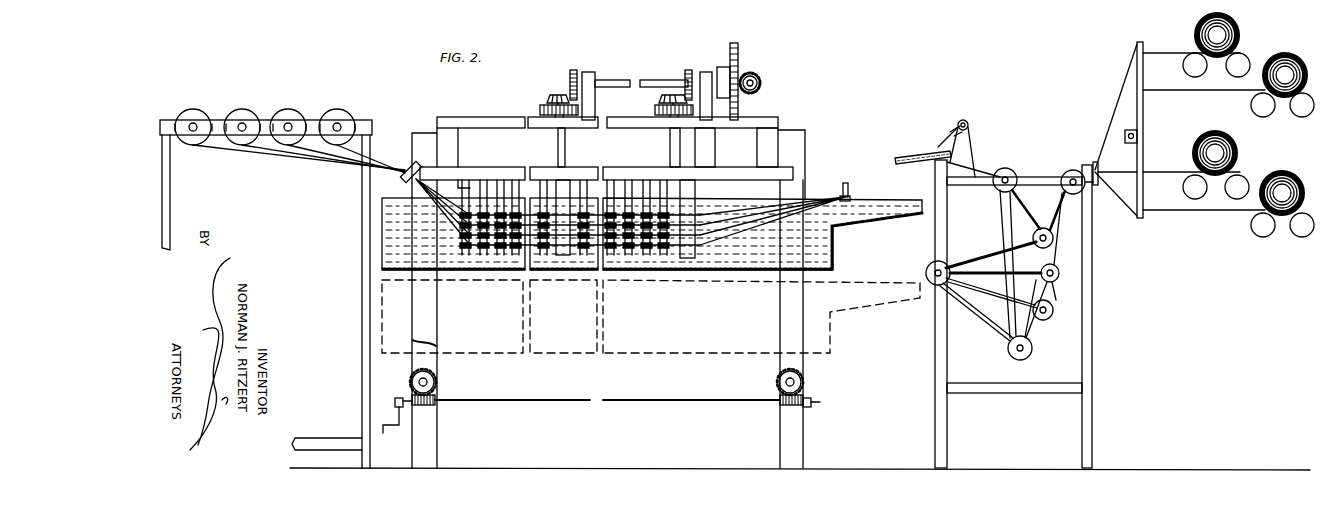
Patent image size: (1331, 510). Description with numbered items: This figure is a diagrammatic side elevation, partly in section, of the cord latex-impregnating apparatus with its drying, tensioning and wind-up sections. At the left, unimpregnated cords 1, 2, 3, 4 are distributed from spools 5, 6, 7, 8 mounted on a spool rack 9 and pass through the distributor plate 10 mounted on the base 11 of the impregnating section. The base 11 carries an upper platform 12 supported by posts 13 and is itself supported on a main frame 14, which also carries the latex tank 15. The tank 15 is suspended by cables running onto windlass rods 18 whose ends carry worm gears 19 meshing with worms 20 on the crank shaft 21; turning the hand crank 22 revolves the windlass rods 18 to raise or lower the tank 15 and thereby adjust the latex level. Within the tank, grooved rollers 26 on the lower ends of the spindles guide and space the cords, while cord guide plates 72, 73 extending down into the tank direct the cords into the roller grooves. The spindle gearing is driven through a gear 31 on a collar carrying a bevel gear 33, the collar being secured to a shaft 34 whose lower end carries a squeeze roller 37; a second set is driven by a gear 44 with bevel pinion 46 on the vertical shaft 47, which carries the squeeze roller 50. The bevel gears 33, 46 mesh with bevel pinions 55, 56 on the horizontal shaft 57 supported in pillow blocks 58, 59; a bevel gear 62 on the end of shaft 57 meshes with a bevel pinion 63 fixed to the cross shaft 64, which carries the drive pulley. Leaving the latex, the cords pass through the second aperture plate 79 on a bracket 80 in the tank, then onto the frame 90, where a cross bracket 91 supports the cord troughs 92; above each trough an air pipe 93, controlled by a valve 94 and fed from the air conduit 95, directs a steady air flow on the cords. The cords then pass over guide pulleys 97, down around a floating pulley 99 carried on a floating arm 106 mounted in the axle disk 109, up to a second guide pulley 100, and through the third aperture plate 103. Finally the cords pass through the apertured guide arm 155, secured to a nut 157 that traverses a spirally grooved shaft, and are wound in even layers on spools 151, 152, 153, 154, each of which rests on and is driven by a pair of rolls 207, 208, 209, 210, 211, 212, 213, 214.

The unimpregnated cord 1 is at (345, 163).
The unimpregnated cord 2 is at (312, 160).
The unimpregnated cord 3 is at (273, 157).
The unimpregnated cord 4 is at (240, 151).
The spool 5 is at (337, 109).
The spool 6 is at (288, 109).
The spool 7 is at (242, 109).
The spool 8 is at (193, 109).
The spool rack 9 is at (366, 120).
The distributor plate 10 is at (404, 165).
The base 11 is at (494, 167).
The upper platform 12 is at (466, 117).
The posts 13 is at (452, 138).
The main frame 14 is at (432, 329).
The latex tank 15 is at (724, 275).
The windlass rods 18 is at (428, 382).
The worm gears 19 is at (410, 380).
The worms 20 is at (425, 405).
The crank shaft 21 is at (614, 405).
The hand crank 22 is at (599, 424).
The roller 26 is at (488, 255).
The gear 31 is at (540, 105).
The bevel gear 33 is at (554, 93).
The shaft 34 is at (565, 146).
The squeeze roller 37 is at (562, 255).
The gear 44 is at (655, 108).
The bevel pinion 46 is at (665, 93).
The vertical shaft 47 is at (670, 143).
The squeeze roller 50 is at (670, 255).
The bevel pinion 55 is at (573, 70).
The bevel pinion 56 is at (688, 70).
The horizontal shaft 57 is at (614, 80).
The pillow block 58 is at (590, 72).
The pillow block 59 is at (708, 72).
The bevel gear 62 is at (742, 52).
The bevel pinion 63 is at (760, 75).
The cross shaft 64 is at (760, 88).
The cord guide plate 72 is at (460, 178).
The cord guide plate 73 is at (700, 186).
The second aperture plate 79 is at (845, 183).
The bracket 80 is at (852, 196).
The frame 90 is at (935, 236).
The cross bracket 91 is at (978, 170).
The cord troughs 92 is at (906, 157).
The air pipe 93 is at (945, 137).
The valve 94 is at (955, 122).
The air conduit 95 is at (967, 121).
The guide pulleys 97 is at (998, 190).
The floating pulley 99 is at (1042, 228).
The second guide pulley 100 is at (1082, 192).
The third aperture plate 103 is at (1094, 162).
The floating arms 106 is at (988, 256).
The axle disk 109 is at (930, 268).
The spool 151 is at (1196, 26).
The spool 152 is at (1287, 52).
The spool 153 is at (1217, 133).
The spool 154 is at (1283, 170).
The guide arm 155 is at (1143, 100).
The nut 157 is at (1137, 148).
The forward roll 207 is at (1183, 64).
The rearward roll 208 is at (1227, 68).
The forward roll 209 is at (1187, 198).
The rearward roll 210 is at (1232, 198).
The forward roll 211 is at (1255, 113).
The rearward roll 212 is at (1295, 113).
The forward roll 213 is at (1254, 235).
The rearward roll 214 is at (1293, 235).